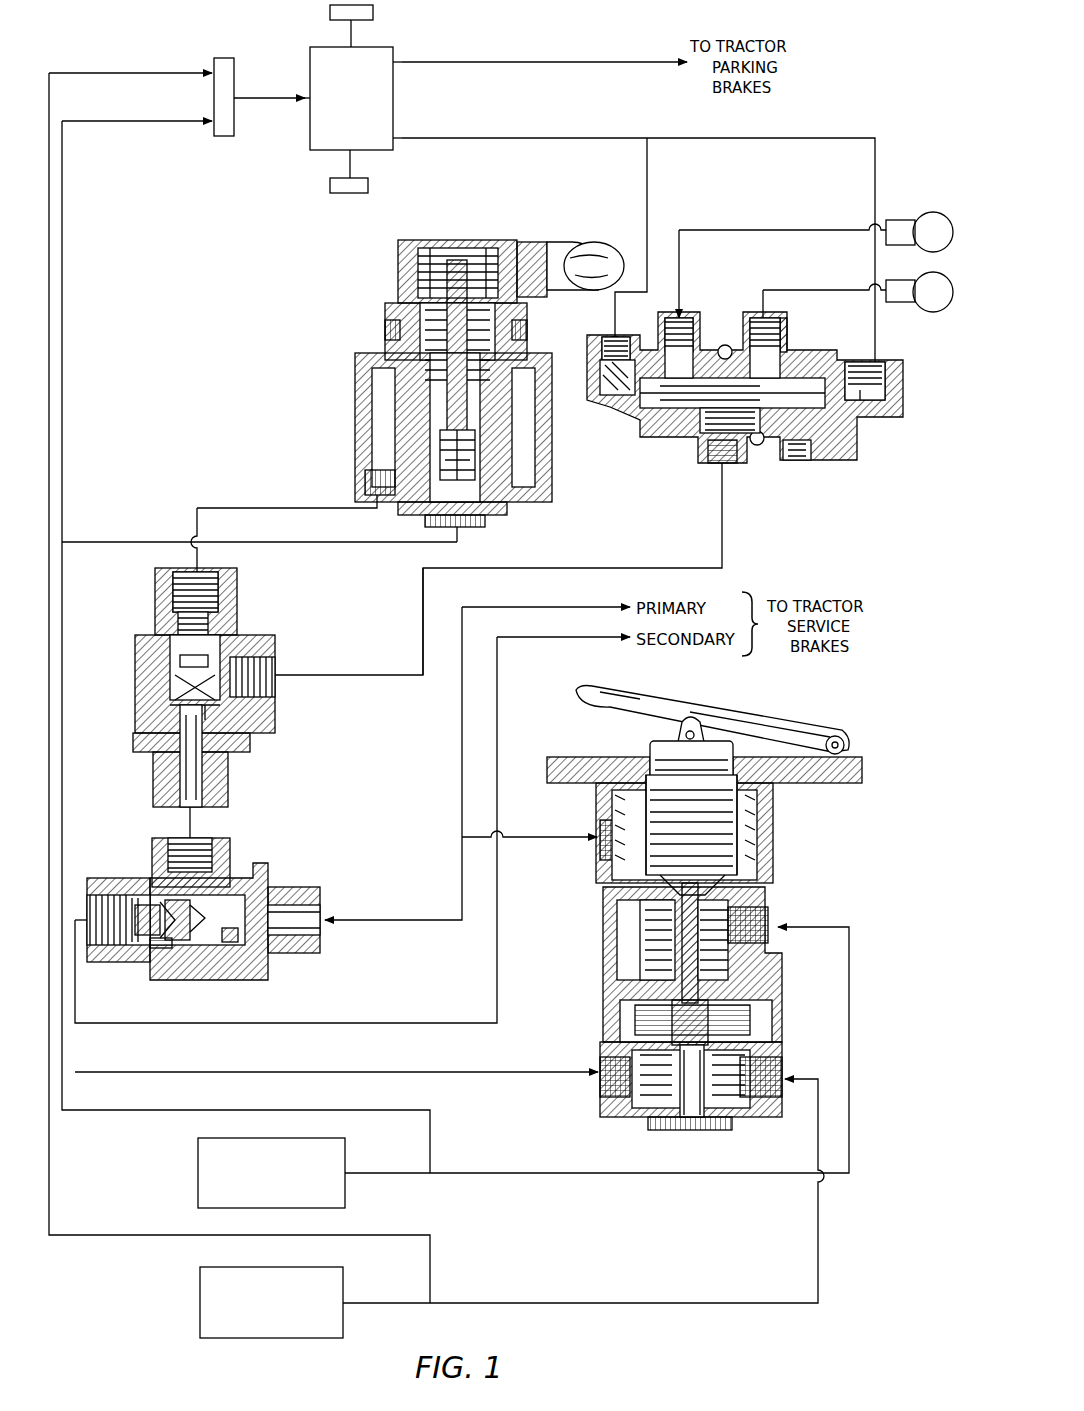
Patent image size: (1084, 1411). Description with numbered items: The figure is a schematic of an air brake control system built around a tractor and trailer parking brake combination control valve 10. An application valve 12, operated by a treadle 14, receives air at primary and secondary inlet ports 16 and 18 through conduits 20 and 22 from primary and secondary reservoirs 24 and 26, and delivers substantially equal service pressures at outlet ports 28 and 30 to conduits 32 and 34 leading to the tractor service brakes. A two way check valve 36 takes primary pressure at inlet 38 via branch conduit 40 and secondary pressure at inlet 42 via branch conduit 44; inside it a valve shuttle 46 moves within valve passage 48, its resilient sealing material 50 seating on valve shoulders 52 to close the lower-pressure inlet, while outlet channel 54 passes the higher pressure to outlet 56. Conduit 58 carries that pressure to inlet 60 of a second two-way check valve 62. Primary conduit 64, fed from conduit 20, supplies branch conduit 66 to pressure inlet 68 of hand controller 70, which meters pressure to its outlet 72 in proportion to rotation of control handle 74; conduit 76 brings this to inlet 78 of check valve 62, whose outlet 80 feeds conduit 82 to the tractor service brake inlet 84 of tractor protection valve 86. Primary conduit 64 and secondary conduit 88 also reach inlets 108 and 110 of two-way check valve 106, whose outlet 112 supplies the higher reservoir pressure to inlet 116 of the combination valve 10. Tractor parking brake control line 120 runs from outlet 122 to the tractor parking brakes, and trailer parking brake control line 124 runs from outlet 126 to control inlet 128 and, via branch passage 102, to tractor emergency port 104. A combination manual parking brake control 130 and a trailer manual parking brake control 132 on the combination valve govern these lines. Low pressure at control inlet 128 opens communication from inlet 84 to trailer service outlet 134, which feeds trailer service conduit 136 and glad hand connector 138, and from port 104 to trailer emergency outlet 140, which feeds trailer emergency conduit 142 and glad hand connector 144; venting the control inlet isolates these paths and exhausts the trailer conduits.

The tractor and trailer parking brake combination control valve 10 is at (292, 50).
The application valve 12 is at (708, 908).
The treadle 14 is at (785, 722).
The primary inlet port 16 is at (782, 925).
The secondary inlet port 18 is at (815, 1072).
The conduit 20 is at (545, 1173).
The conduit 22 is at (590, 1303).
The primary reservoir 24 is at (348, 1155).
The secondary reservoir 26 is at (346, 1285).
The outlet port 28 is at (590, 845).
The outlet port 30 is at (597, 1072).
The conduit 32 is at (555, 605).
The conduit 34 is at (560, 640).
The two way check valve 36 is at (224, 904).
The inlet 38 is at (325, 920).
The branch conduit 40 is at (430, 918).
The inlet 42 is at (87, 913).
The branch conduit 44 is at (78, 990).
The valve shuttle 46 is at (233, 942).
The valve passage 48 is at (162, 945).
The resilient sealing material 50 is at (168, 890).
The valve shoulders 52 is at (150, 878).
The outlet channel 54 is at (205, 858).
The outlet 56 is at (200, 850).
The conduit 58 is at (207, 827).
The inlet 60 is at (187, 803).
The two-way check valve 62 is at (225, 687).
The primary conduit 64 is at (66, 742).
The branch conduit 66 is at (108, 542).
The pressure inlet 68 is at (460, 522).
The hand controller 70 is at (464, 379).
The outlet 72 is at (375, 497).
The control handle 74 is at (545, 240).
The conduit 76 is at (262, 505).
The inlet 78 is at (203, 580).
The outlet 80 is at (278, 675).
The conduit 82 is at (420, 613).
The tractor service brake inlet 84 is at (725, 455).
The tractor protection valve 86 is at (830, 465).
The secondary conduit 88 is at (52, 108).
The branch passage 102 is at (650, 186).
The tractor emergency port 104 is at (612, 332).
The two-way check valve 106 is at (208, 58).
The inlet 108 is at (207, 80).
The inlet 110 is at (207, 124).
The outlet 112 is at (240, 98).
The inlet 116 is at (303, 112).
The tractor parking brake control line 120 is at (518, 64).
The outlet 122 is at (398, 64).
The trailer parking brake control line 124 is at (505, 143).
The outlet 126 is at (398, 136).
The control inlet 128 is at (892, 368).
The combination manual parking brake control 130 is at (370, 12).
The trailer manual parking brake control 132 is at (328, 186).
The trailer service outlet 134 is at (788, 322).
The trailer service conduit 136 is at (770, 290).
The glad hand connector 138 is at (940, 312).
The trailer emergency outlet 140 is at (690, 310).
The trailer emergency conduit 142 is at (770, 230).
The glad hand connector 144 is at (935, 215).